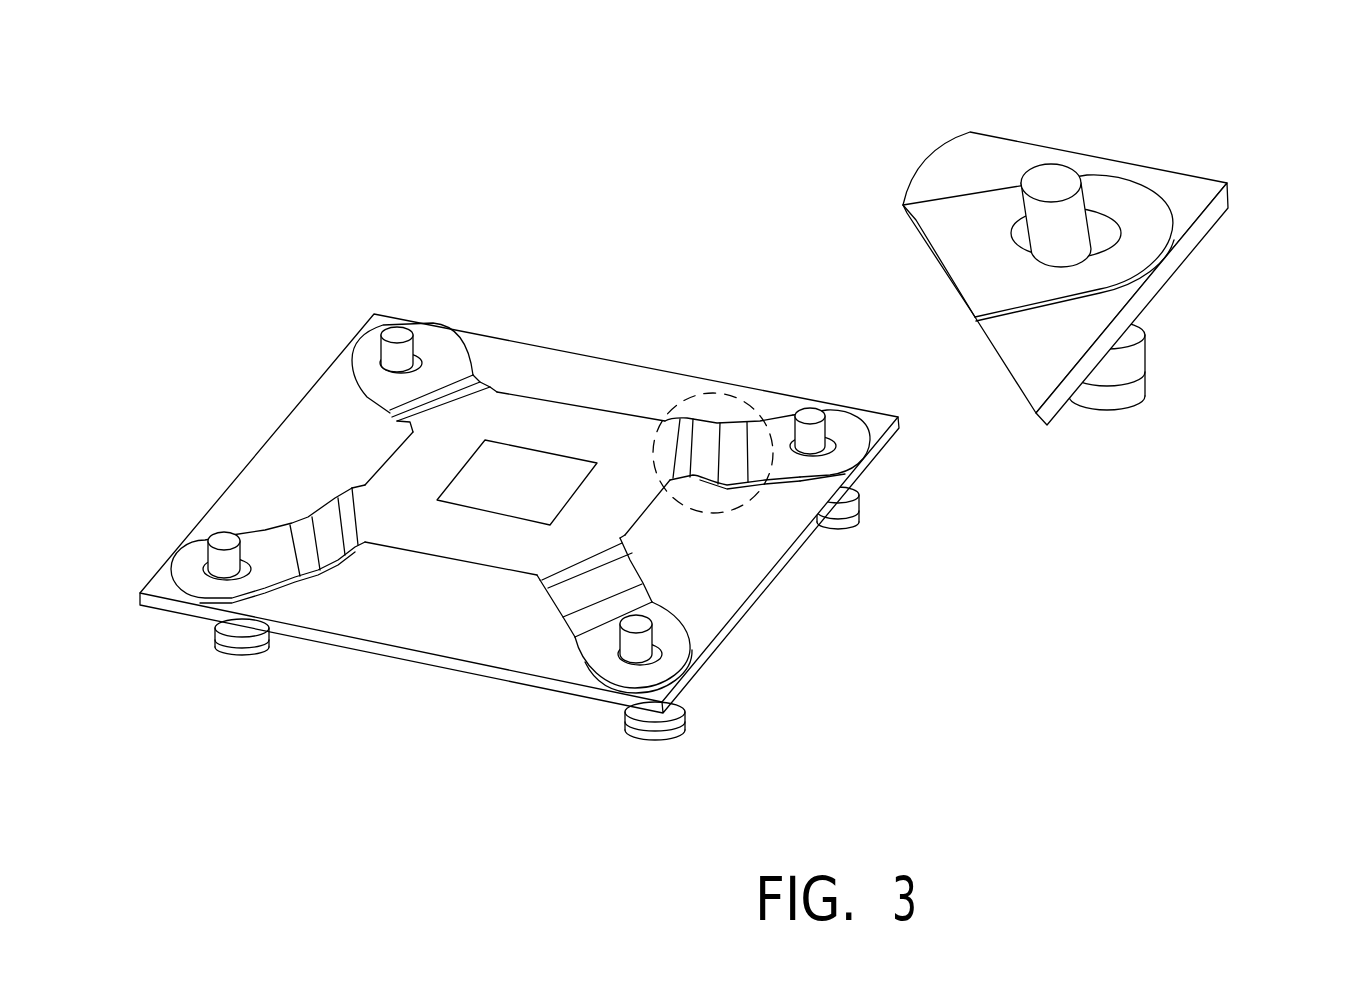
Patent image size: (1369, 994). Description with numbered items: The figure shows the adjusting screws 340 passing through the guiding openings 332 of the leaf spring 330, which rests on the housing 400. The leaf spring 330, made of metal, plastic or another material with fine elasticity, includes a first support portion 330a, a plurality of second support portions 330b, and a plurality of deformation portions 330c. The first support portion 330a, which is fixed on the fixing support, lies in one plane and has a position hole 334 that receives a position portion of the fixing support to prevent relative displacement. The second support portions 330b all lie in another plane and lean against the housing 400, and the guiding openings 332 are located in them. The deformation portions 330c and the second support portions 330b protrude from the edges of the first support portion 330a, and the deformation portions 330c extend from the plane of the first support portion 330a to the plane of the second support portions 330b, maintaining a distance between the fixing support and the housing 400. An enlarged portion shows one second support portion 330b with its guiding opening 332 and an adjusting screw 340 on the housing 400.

The leaf spring 330 is at (743, 448).
The first support portion 330a is at (568, 420).
The second support portions 330b is at (780, 433).
The deformation portions 330c is at (708, 395).
The guiding openings 332 is at (836, 438).
The position hole 334 is at (515, 482).
The adjusting screws 340 is at (820, 430).
The housing 400 is at (717, 587).